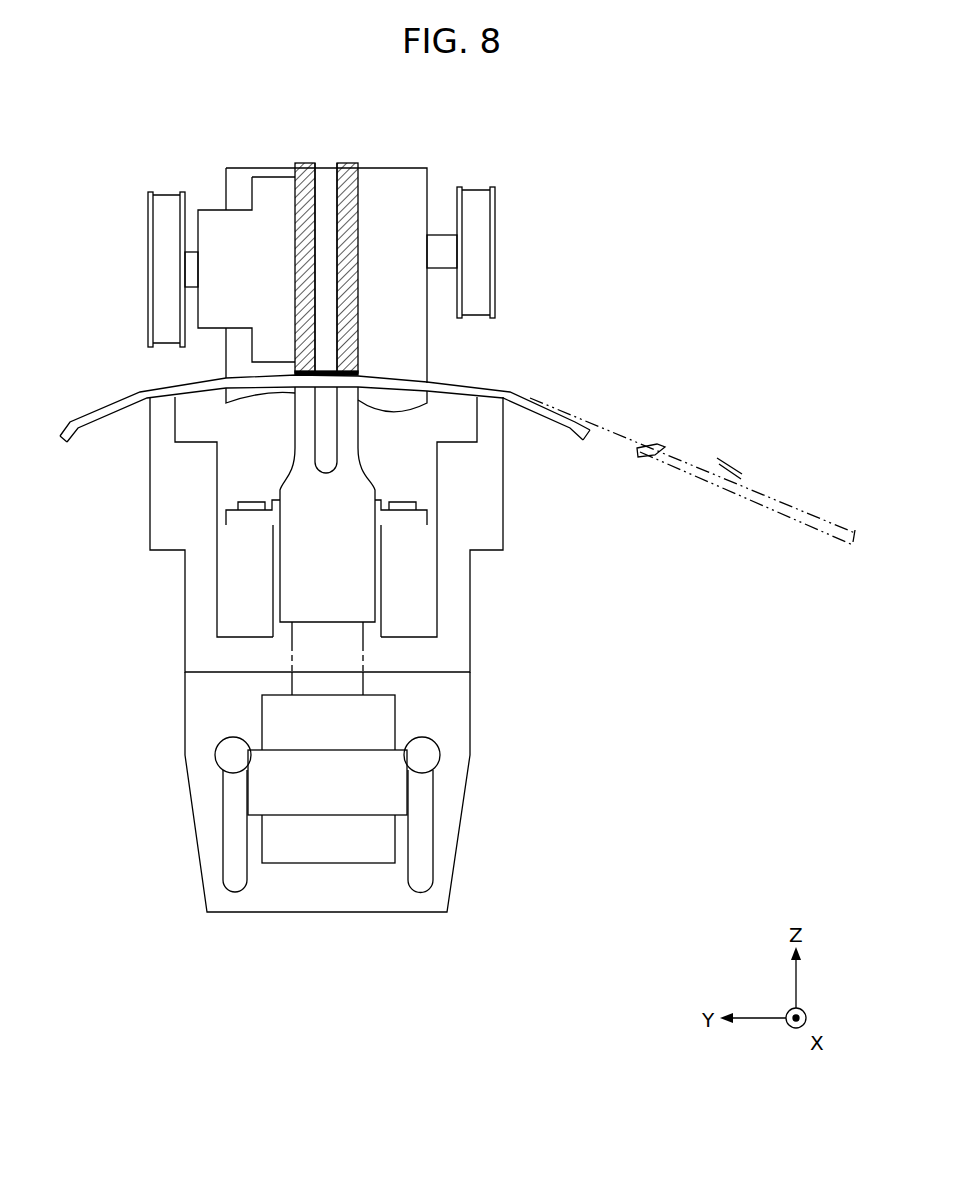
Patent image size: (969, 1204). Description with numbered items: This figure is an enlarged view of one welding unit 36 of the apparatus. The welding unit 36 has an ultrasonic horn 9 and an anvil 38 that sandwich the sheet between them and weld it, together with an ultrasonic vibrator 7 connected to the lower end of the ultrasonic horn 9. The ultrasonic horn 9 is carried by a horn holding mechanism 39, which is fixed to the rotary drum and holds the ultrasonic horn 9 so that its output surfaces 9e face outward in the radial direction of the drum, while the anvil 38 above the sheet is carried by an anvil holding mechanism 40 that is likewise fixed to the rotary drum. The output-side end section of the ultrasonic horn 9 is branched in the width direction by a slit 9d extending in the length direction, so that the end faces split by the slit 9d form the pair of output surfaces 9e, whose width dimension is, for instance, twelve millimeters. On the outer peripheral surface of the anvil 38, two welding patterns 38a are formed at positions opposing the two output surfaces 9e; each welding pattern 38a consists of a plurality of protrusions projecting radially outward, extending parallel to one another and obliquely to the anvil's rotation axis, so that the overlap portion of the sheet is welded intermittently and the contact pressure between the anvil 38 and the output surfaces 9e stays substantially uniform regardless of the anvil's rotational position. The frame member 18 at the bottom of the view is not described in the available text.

The welding unit 36 is at (131, 143).
The anvil 38 is at (327, 182).
The welding patterns 38a is at (303, 163).
The output surfaces 9e is at (301, 368).
The slit 9d is at (315, 415).
The ultrasonic horn 9 is at (345, 450).
The anvil holding mechanism 40 is at (556, 153).
The horn holding mechanism 39 is at (557, 560).
The base frame 18 is at (463, 807).
The ultrasonic vibrator 7 is at (353, 853).